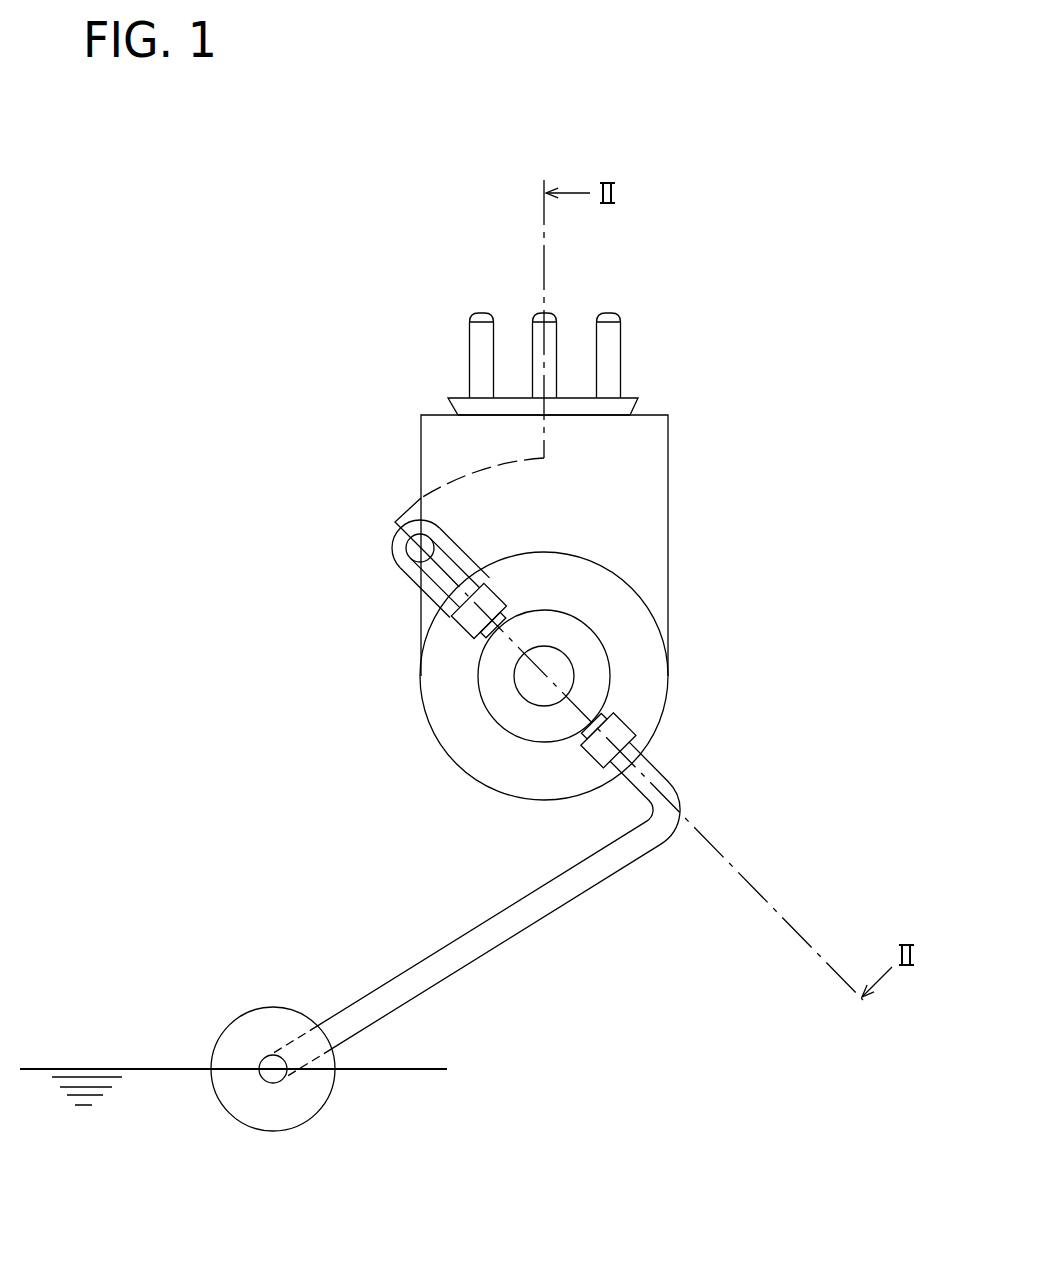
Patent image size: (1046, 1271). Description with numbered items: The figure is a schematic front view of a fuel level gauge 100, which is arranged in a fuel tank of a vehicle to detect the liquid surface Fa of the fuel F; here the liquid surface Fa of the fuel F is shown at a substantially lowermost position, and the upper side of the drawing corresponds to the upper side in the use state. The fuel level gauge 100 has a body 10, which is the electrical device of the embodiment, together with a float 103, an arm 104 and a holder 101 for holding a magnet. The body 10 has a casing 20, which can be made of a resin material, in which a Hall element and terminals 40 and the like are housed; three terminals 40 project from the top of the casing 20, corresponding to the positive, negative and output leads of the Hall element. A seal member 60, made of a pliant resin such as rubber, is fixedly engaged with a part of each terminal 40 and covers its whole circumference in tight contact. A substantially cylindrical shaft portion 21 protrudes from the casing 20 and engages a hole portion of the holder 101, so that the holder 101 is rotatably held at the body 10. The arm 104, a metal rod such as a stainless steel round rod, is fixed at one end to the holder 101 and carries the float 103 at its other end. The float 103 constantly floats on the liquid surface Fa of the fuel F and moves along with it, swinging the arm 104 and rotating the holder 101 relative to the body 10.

The fuel level gauge 100 is at (212, 170).
The body 10 is at (672, 445).
The casing 20 is at (668, 482).
The shaft portion 21 is at (529, 678).
The terminal 40 is at (610, 337).
The seal member 60 is at (630, 400).
The holder 101 is at (437, 744).
The float 103 is at (250, 1006).
The arm 104 is at (335, 1013).
The fuel F is at (173, 1120).
The liquid surface Fa is at (60, 1068).